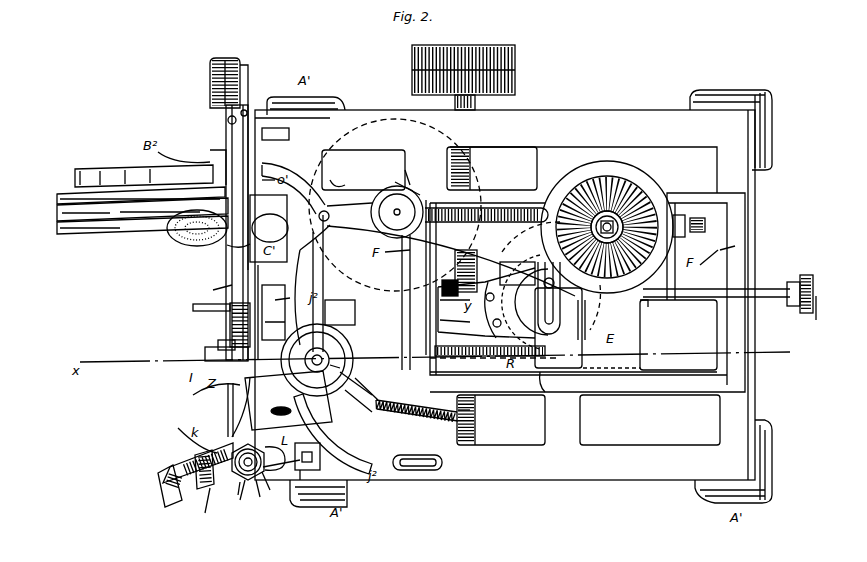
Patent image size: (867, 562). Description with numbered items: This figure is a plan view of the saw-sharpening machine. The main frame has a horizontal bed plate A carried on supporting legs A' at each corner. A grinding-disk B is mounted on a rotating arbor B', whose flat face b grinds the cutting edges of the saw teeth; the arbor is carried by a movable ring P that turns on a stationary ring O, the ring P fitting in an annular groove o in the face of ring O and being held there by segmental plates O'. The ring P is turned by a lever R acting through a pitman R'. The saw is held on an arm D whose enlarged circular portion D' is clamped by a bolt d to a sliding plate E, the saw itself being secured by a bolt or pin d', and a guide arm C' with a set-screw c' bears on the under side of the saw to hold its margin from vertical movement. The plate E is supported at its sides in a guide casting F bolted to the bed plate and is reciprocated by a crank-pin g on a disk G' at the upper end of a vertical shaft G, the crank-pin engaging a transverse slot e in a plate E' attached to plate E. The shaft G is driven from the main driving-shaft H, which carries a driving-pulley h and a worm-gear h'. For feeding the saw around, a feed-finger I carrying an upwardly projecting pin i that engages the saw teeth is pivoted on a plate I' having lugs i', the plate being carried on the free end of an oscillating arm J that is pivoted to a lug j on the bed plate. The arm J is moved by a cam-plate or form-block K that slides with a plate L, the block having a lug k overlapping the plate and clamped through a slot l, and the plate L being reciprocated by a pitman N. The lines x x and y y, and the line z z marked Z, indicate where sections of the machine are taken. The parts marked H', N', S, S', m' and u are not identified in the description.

The bed plate A is at (505, 295).
The supporting legs A' is at (519, 287).
The grinding-disk B is at (322, 205).
The arbor B' is at (224, 258).
The guide arm C' is at (328, 196).
The arm D is at (444, 277).
The circular portion of arm D' is at (607, 227).
The sliding plate E is at (587, 292).
The plate E' is at (611, 367).
The guide plate F is at (650, 420).
The vertical shaft G is at (598, 320).
The disk G' is at (516, 302).
The main driving-shaft H is at (501, 420).
The bracket H' is at (492, 168).
The feed-finger I is at (271, 312).
The plate I' is at (304, 297).
The oscillating arm J is at (336, 426).
The form-block K is at (237, 405).
The sliding plate L is at (192, 470).
The pitman N is at (486, 303).
The link N' is at (209, 397).
The stationary ring O is at (293, 178).
The segmental plates O' is at (233, 230).
The movable ring P is at (226, 292).
The lever R is at (359, 351).
The pitman R' is at (214, 338).
The table S is at (142, 216).
The table strip S' is at (140, 222).
The section line z z Z is at (257, 501).
The face of grinding-disk b is at (227, 228).
The set-screw c' is at (336, 220).
The bolt d is at (618, 227).
The bolt or pin d' is at (397, 212).
The transverse slot e is at (535, 265).
The crank-pin g is at (554, 298).
The driving-pulley h is at (473, 77).
The worm-gear h' is at (458, 273).
The pin i is at (322, 238).
The lugs i' is at (276, 410).
The lug j is at (392, 300).
The lug k is at (178, 415).
The slot l is at (276, 495).
The block m' is at (515, 272).
The annular groove o is at (237, 118).
The pin u is at (538, 382).
The section line x x is at (435, 361).
The section line y y is at (810, 317).